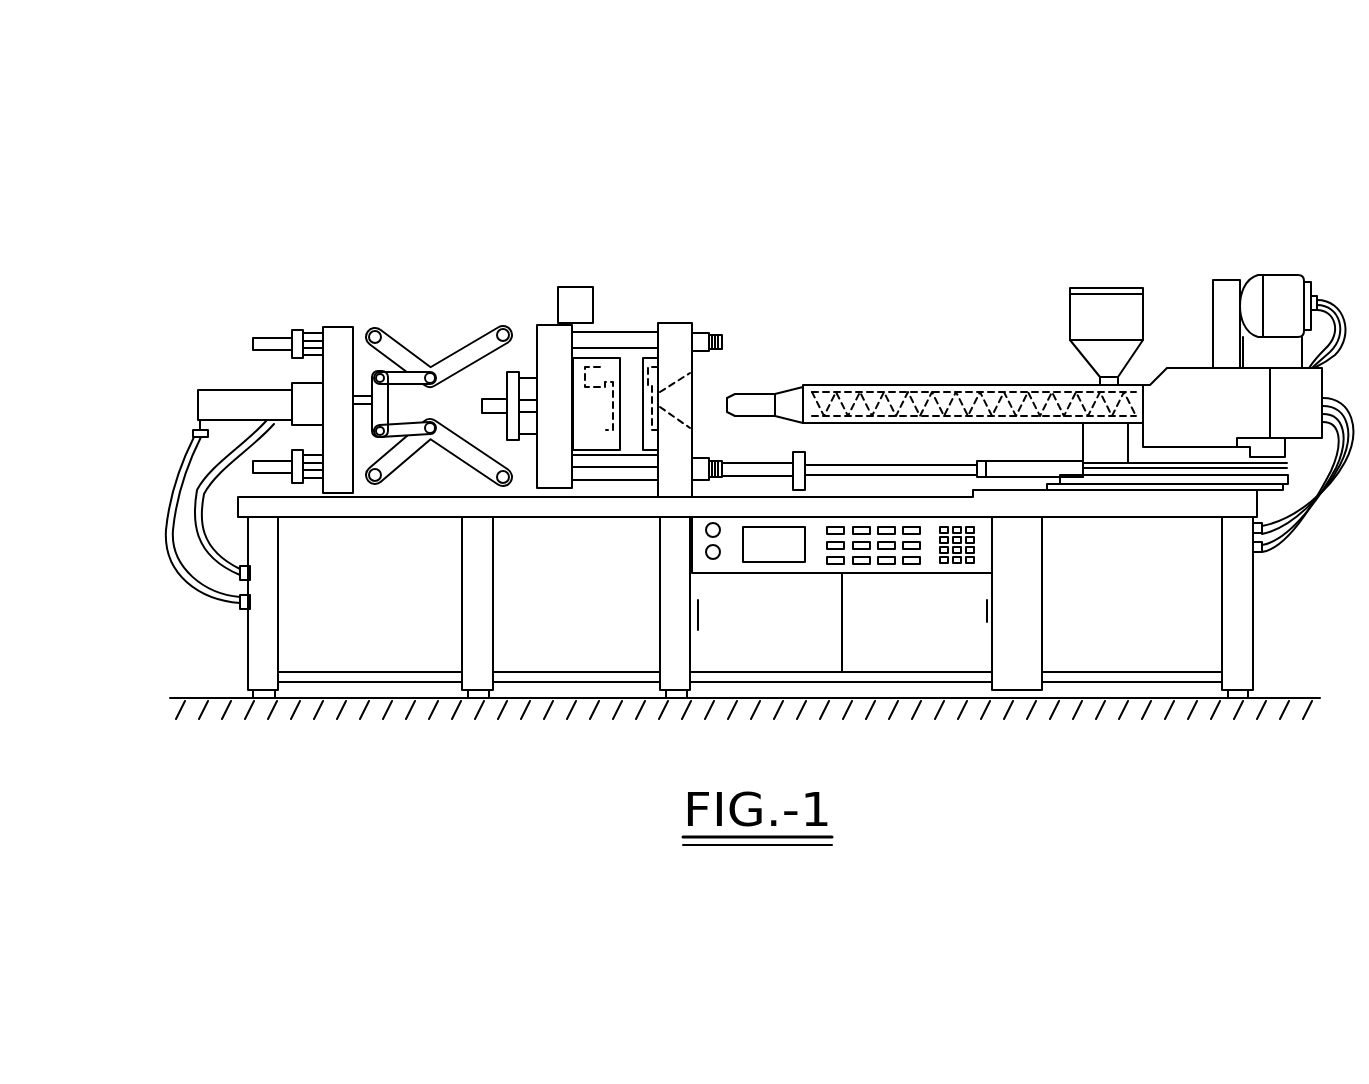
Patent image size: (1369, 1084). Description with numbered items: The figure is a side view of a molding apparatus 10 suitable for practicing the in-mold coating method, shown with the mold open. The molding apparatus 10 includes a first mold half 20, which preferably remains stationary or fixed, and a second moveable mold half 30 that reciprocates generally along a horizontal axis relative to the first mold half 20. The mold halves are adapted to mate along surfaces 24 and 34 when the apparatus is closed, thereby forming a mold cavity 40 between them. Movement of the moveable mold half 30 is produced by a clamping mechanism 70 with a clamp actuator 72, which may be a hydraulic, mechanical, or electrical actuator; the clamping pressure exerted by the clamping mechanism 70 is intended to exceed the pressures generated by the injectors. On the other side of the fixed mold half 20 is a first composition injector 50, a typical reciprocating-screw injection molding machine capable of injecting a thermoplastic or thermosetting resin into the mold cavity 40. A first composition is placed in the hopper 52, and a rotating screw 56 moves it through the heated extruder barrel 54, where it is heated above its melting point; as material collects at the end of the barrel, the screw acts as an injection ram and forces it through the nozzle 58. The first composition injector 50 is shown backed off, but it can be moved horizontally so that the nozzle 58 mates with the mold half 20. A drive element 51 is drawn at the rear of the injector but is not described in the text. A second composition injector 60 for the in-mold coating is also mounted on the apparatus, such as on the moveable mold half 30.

The molding apparatus 10 is at (606, 215).
The first mold half 20 is at (682, 323).
The mating surface 24 is at (641, 378).
The second moveable mold half 30 is at (546, 325).
The mating surface 34 is at (621, 378).
The mold cavity 40 is at (633, 444).
The first composition injector 50 is at (976, 360).
The drive motor 51 is at (1270, 273).
The hopper 52 is at (1071, 300).
The heated extruder barrel 54 is at (920, 385).
The rotating screw 56 is at (922, 414).
The nozzle 58 is at (728, 398).
The second composition injector 60 is at (570, 289).
The clamping mechanism 70 is at (349, 318).
The clamp actuator 72 is at (233, 398).